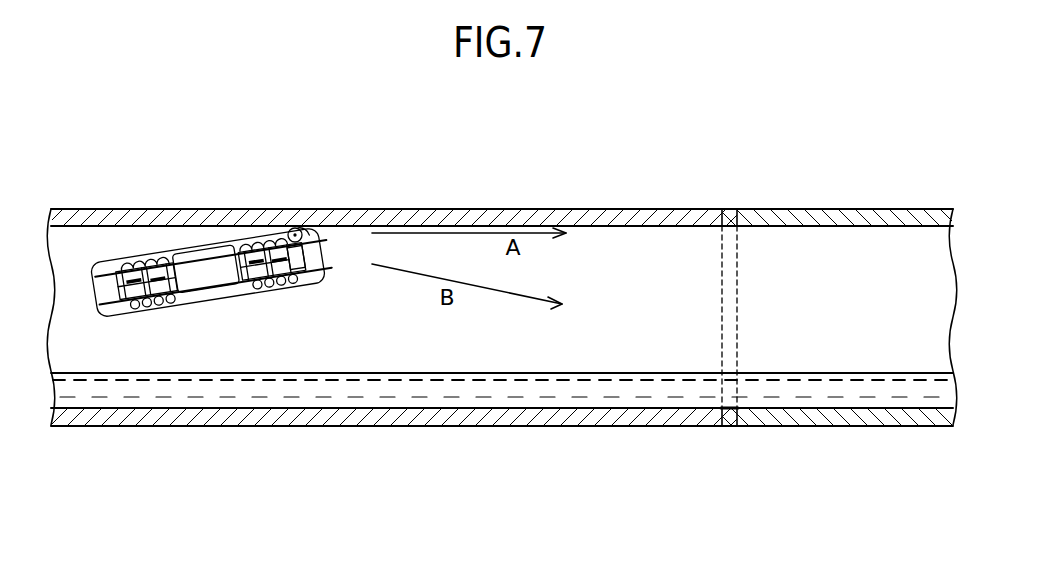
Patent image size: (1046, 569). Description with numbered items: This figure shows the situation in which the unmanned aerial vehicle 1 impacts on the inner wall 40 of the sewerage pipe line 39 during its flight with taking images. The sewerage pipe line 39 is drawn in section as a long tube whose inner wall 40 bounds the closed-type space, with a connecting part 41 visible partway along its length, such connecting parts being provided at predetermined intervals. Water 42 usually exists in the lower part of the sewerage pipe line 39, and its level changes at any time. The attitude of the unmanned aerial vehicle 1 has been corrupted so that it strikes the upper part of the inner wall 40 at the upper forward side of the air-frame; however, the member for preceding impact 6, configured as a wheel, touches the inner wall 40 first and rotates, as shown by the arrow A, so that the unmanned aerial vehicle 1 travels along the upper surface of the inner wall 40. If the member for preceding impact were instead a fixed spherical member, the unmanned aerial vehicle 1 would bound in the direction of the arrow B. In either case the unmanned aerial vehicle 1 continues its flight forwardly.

The unmanned aerial vehicle 1 is at (206, 236).
The member for preceding impact 6 is at (300, 228).
The sewerage pipe line 39 is at (878, 355).
The inner wall 40 is at (634, 208).
The connecting part 41 is at (728, 328).
The water 42 is at (240, 394).